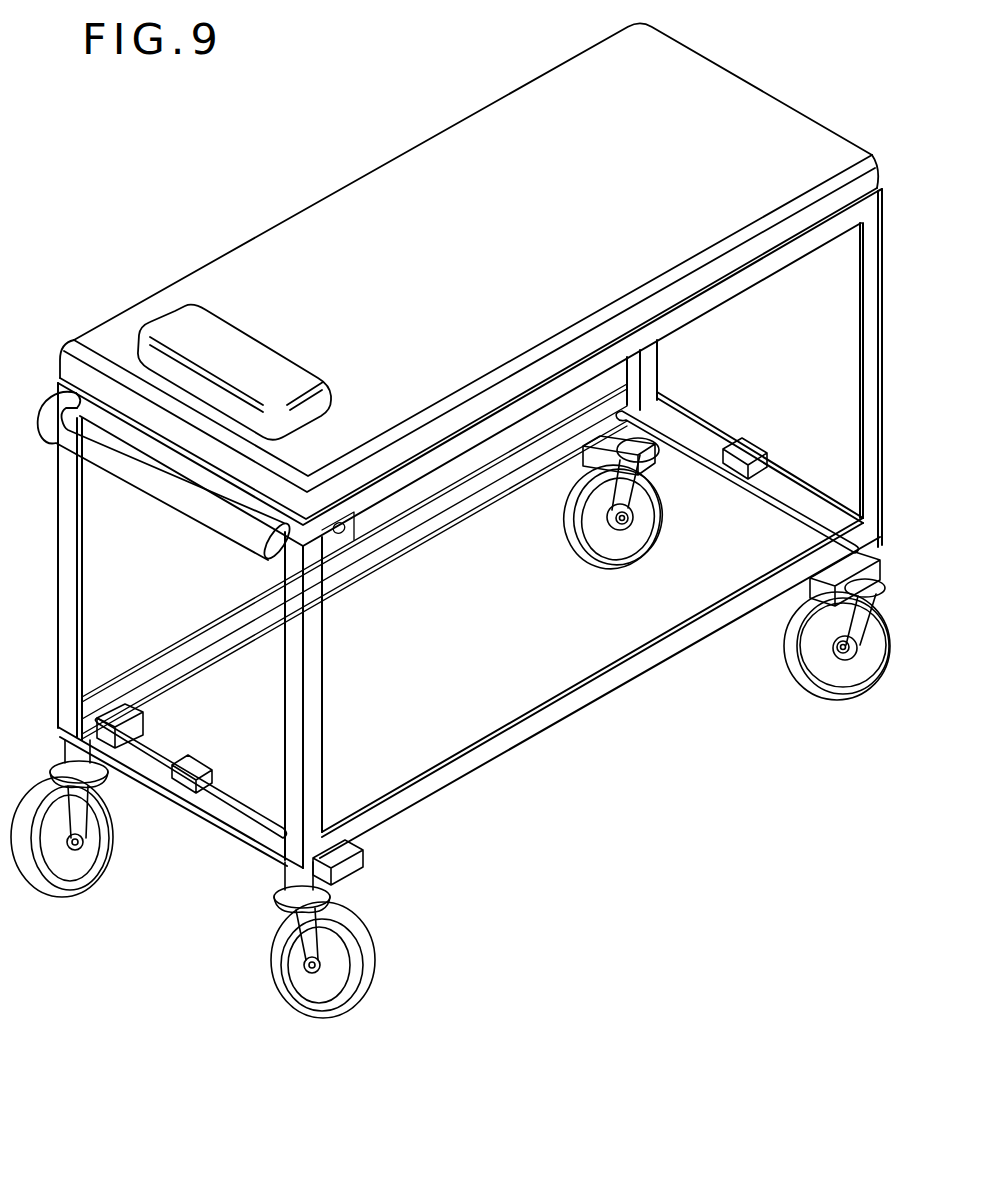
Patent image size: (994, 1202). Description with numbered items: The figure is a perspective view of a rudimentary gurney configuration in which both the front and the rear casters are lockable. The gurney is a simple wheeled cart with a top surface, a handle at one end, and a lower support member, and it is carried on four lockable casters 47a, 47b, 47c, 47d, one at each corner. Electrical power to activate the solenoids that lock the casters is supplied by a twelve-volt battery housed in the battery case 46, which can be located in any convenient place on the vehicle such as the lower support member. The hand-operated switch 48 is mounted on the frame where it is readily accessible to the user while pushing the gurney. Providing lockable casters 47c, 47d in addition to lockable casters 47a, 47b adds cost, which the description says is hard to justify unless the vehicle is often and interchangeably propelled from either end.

The battery case 46 is at (202, 777).
The lockable caster 47a is at (363, 933).
The lockable caster 47b is at (100, 867).
The lockable caster 47c is at (577, 557).
The lockable caster 47d is at (797, 688).
The switch 48 is at (344, 533).